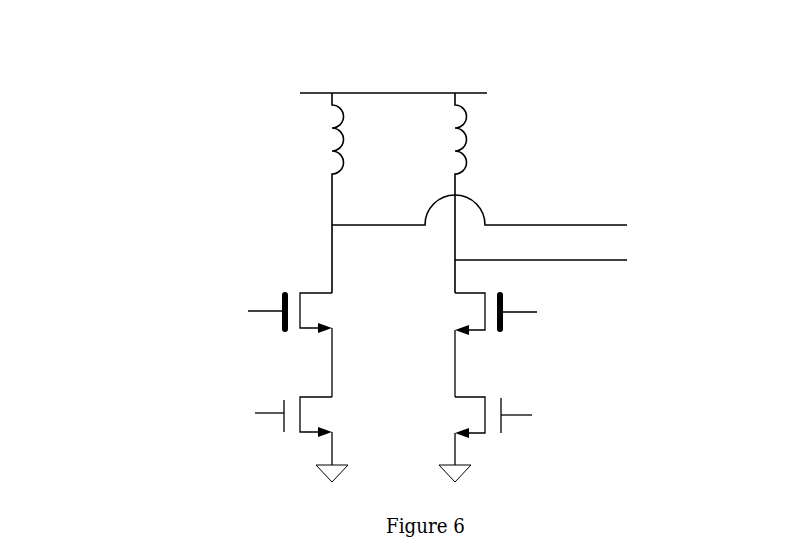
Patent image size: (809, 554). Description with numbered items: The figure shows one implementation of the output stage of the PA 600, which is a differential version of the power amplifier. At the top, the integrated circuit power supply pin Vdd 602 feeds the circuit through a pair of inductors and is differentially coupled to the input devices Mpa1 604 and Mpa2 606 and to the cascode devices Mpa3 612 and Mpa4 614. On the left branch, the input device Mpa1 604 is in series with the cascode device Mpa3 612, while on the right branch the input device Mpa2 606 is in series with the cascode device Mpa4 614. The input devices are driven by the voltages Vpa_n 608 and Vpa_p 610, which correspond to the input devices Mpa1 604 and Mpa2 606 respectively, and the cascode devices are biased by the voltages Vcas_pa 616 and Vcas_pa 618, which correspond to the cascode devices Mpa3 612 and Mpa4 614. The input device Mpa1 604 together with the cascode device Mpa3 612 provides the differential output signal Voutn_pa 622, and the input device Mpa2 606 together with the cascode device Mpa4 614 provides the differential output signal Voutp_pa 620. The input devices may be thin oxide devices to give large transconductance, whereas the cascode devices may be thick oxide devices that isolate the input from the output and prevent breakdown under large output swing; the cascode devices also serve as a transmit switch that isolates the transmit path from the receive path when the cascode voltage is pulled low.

The output stage of the PA 600 is at (409, 249).
The IC power supply pin Vdd 602 is at (392, 53).
The input device Mpa1 604 is at (226, 383).
The input device Mpa2 606 is at (554, 383).
The voltage Vpa_n 608 is at (191, 433).
The voltage Vpa_p 610 is at (594, 437).
The cascode device Mpa3 612 is at (226, 273).
The cascode device Mpa4 614 is at (554, 280).
The voltage Vcas_pa 616 is at (186, 333).
The voltage Vcas_pa 618 is at (614, 327).
The differential output signal Voutp_pa 620 is at (741, 222).
The differential output signal Voutn_pa 622 is at (741, 263).